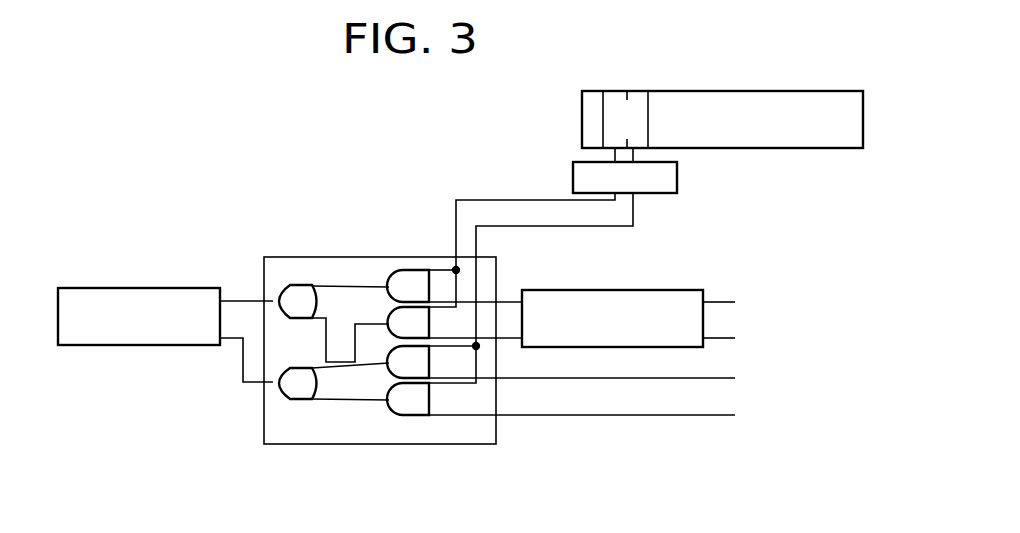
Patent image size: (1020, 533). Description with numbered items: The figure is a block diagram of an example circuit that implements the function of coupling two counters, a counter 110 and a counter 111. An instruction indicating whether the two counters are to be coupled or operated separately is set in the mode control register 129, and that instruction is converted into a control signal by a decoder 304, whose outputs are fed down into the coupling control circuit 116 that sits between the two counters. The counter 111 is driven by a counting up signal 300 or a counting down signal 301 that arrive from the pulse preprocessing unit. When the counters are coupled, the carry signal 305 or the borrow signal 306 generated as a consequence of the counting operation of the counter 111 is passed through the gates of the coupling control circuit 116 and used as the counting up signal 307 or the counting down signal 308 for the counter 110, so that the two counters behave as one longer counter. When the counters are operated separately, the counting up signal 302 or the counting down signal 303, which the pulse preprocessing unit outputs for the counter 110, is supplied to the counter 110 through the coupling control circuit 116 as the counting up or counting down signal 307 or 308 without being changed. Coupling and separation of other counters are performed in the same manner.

The counter 110 is at (150, 288).
The counter 111 is at (636, 290).
The coupling control circuit 116 is at (436, 445).
The mode control register 129 is at (765, 148).
The decoder 304 is at (572, 176).
The carry signal 305 is at (508, 300).
The borrow signal 306 is at (513, 335).
The counting up signal 307 is at (243, 300).
The counting down signal 308 is at (241, 364).
The counting up signal 300 is at (735, 302).
The counting down signal 301 is at (735, 338).
The counting up signal 302 is at (735, 378).
The counting down signal 303 is at (735, 415).